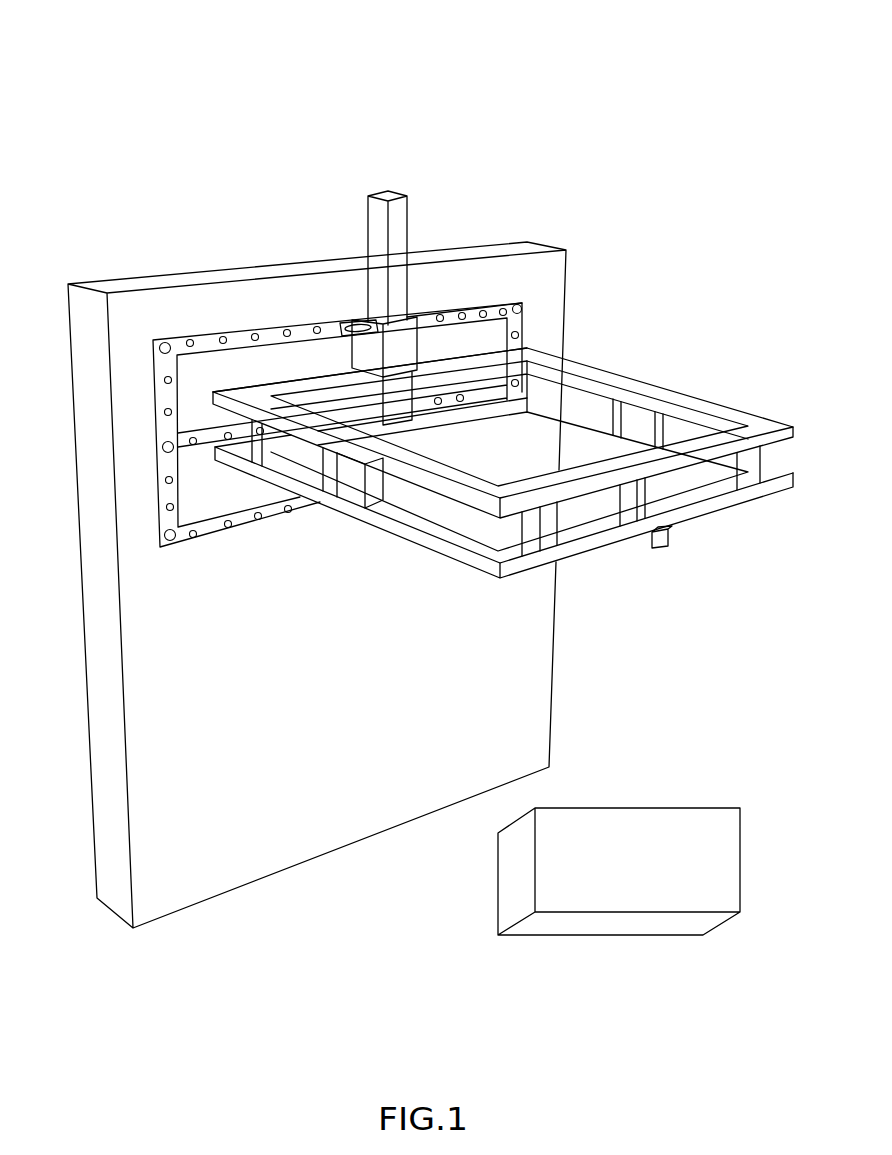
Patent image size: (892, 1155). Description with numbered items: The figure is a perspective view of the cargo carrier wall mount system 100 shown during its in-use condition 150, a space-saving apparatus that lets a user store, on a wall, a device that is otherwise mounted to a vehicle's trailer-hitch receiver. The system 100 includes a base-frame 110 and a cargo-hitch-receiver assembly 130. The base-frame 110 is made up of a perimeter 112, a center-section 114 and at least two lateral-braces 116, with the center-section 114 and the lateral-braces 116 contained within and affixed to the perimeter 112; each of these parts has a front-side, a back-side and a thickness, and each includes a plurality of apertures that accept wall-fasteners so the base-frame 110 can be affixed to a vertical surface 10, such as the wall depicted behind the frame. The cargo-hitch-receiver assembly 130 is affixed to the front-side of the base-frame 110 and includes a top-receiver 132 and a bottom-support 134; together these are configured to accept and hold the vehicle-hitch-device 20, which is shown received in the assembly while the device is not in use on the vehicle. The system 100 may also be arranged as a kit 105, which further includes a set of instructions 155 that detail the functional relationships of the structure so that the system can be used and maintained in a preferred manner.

The vertical surface 10 is at (253, 738).
The vehicle-hitch-device 20 is at (603, 540).
The cargo carrier wall mount system 100 is at (414, 100).
The kit 105 is at (512, 100).
The base-frame 110 is at (487, 313).
The perimeter 112 is at (203, 333).
The center-section 114 is at (325, 375).
The lateral-braces 116 is at (575, 364).
The cargo-hitch-receiver assembly 130 is at (418, 330).
The top-receiver 132 is at (360, 347).
The bottom-support 134 is at (361, 508).
The in-use condition 150 is at (610, 100).
The set of instructions 155 is at (660, 808).